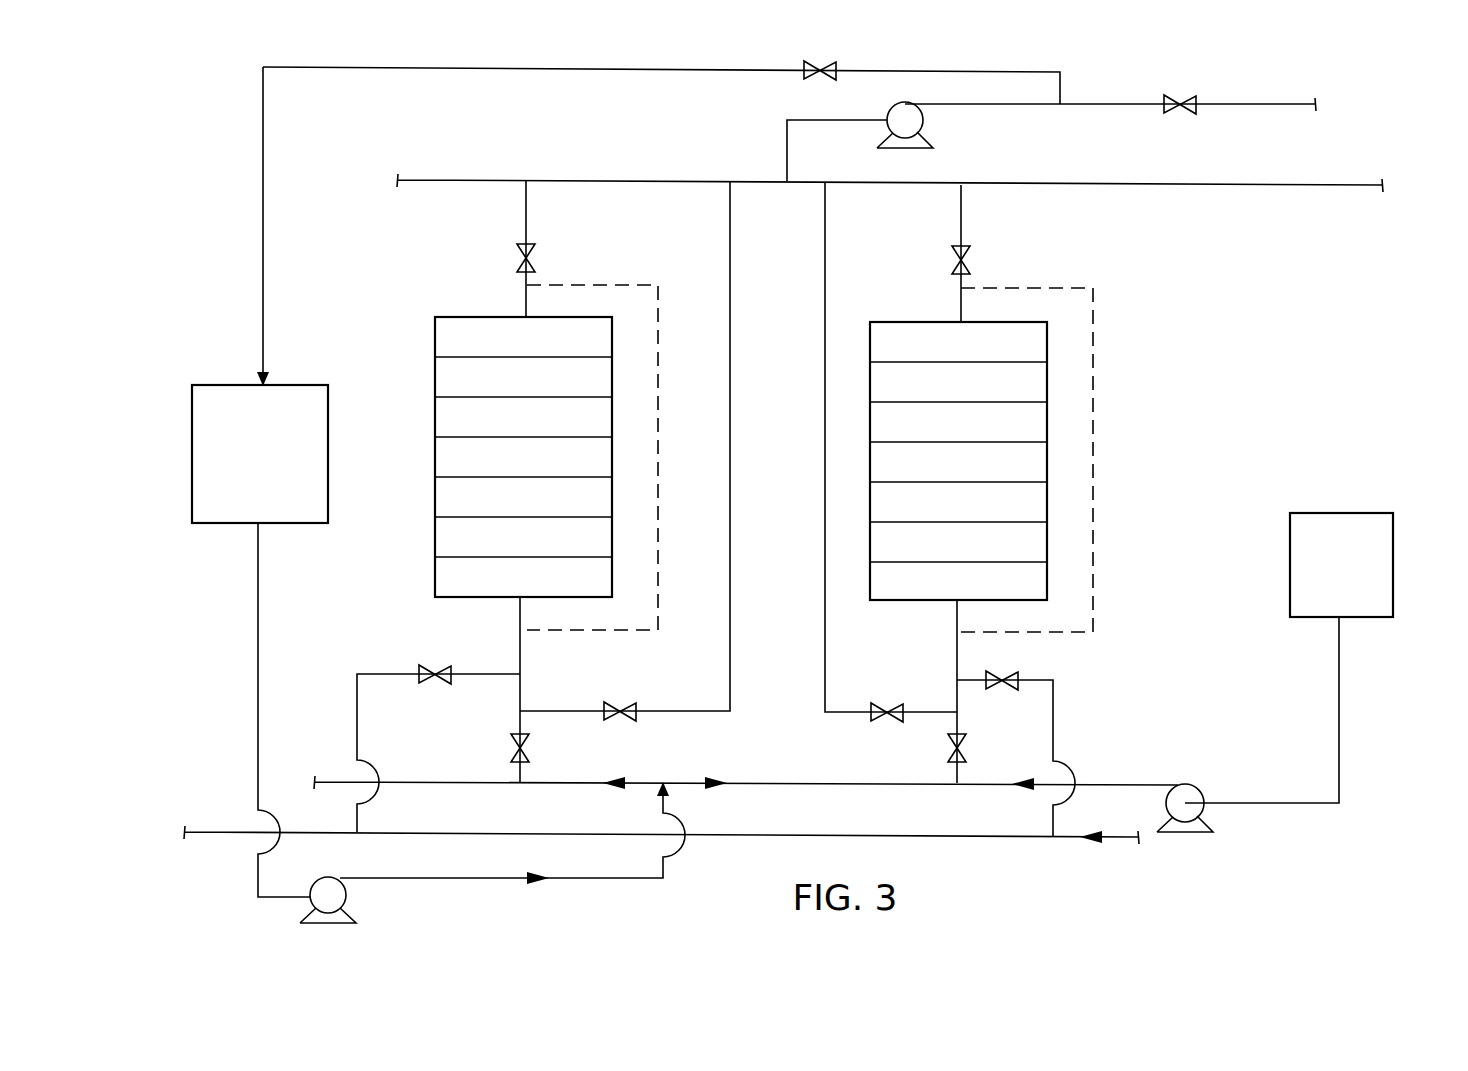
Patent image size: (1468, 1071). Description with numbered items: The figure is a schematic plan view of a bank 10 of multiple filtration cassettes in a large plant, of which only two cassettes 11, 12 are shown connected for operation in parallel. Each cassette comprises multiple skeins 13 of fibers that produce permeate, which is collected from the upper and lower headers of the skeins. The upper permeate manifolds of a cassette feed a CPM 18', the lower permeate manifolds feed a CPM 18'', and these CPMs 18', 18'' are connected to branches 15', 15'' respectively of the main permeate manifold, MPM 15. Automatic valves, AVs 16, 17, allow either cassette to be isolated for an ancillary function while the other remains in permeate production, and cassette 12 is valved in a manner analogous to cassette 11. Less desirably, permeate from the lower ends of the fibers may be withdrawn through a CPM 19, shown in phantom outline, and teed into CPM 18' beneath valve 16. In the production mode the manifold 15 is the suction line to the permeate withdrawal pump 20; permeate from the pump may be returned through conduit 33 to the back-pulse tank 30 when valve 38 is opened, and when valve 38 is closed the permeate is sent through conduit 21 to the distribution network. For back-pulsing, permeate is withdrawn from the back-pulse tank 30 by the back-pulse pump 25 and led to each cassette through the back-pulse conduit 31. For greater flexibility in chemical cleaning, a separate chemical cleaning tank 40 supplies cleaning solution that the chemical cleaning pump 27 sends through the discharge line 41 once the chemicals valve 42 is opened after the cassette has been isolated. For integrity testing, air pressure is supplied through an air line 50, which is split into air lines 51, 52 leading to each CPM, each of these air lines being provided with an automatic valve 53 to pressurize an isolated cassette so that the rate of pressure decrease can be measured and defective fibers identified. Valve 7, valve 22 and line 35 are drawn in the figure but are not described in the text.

The valve 7 is at (886, 702).
The bank of cassettes 10 is at (395, 546).
The cassette 11 is at (408, 420).
The cassette 12 is at (1064, 432).
The skeins 13 is at (505, 469).
The MPM 15 is at (890, 156).
The branch of the MPM 15' is at (588, 155).
The branch of the MPM 15'' is at (1153, 156).
The AV 16 is at (536, 258).
The AV 17 is at (625, 700).
The CPM 18' is at (743, 251).
The CPM 18'' is at (738, 446).
The CPM 19 is at (658, 333).
The permeate withdrawal pump 20 is at (933, 146).
The conduit 21 is at (1293, 108).
The valve 22 is at (1196, 97).
The back-pulse pump 25 is at (300, 918).
The chemical cleaning pump 27 is at (1215, 832).
The back-pulse tank 30 is at (208, 524).
The back-pulse conduit 31 is at (612, 880).
The conduit 33 is at (1060, 78).
The line 35 is at (1063, 108).
The valve 38 is at (805, 79).
The chemical cleaning tank 40 is at (1393, 565).
The discharge line 41 is at (1130, 783).
The chemicals valve 42 is at (530, 745).
The air line 50 is at (1053, 840).
The air line 51 is at (357, 688).
The air line 52 is at (1053, 700).
The automatic valves 53 is at (430, 664).